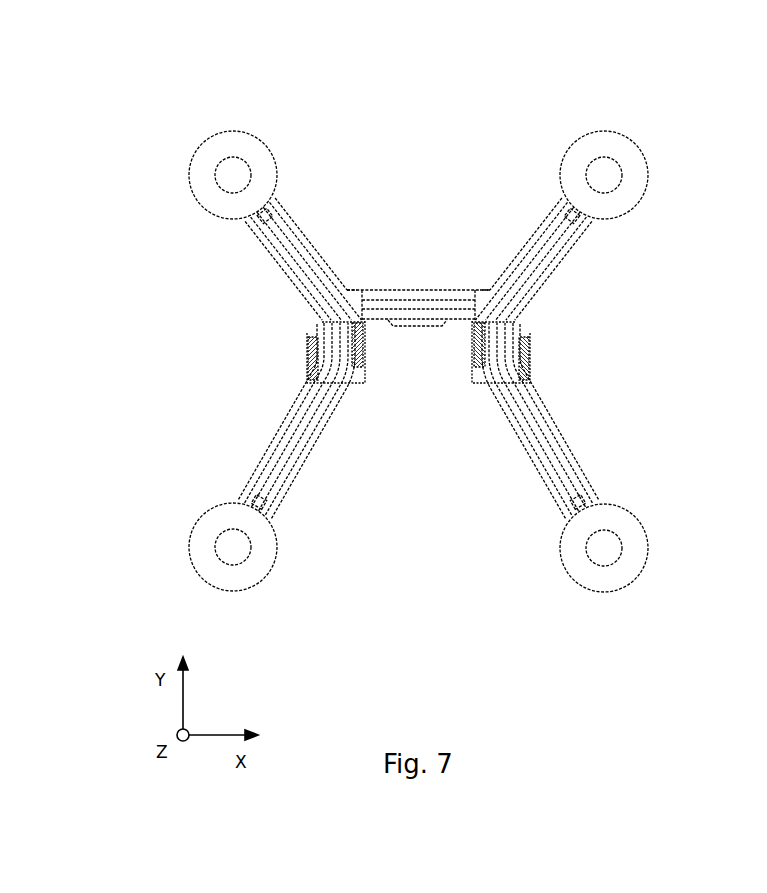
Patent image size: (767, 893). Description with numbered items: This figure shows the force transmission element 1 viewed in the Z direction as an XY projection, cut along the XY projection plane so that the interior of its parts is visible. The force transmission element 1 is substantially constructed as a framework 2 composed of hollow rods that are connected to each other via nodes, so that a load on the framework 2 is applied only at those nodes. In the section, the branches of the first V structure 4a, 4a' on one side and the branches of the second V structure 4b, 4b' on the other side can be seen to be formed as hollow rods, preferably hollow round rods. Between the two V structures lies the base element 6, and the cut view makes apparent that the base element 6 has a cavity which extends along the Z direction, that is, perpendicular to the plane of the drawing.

The force transmission element 1 is at (683, 91).
The framework 2 is at (587, 474).
The first V structure 4a is at (246, 296).
The first V structure 4a' is at (272, 420).
The second V structure 4b is at (591, 281).
The second V structure 4b' is at (563, 420).
The base element 6 is at (420, 308).